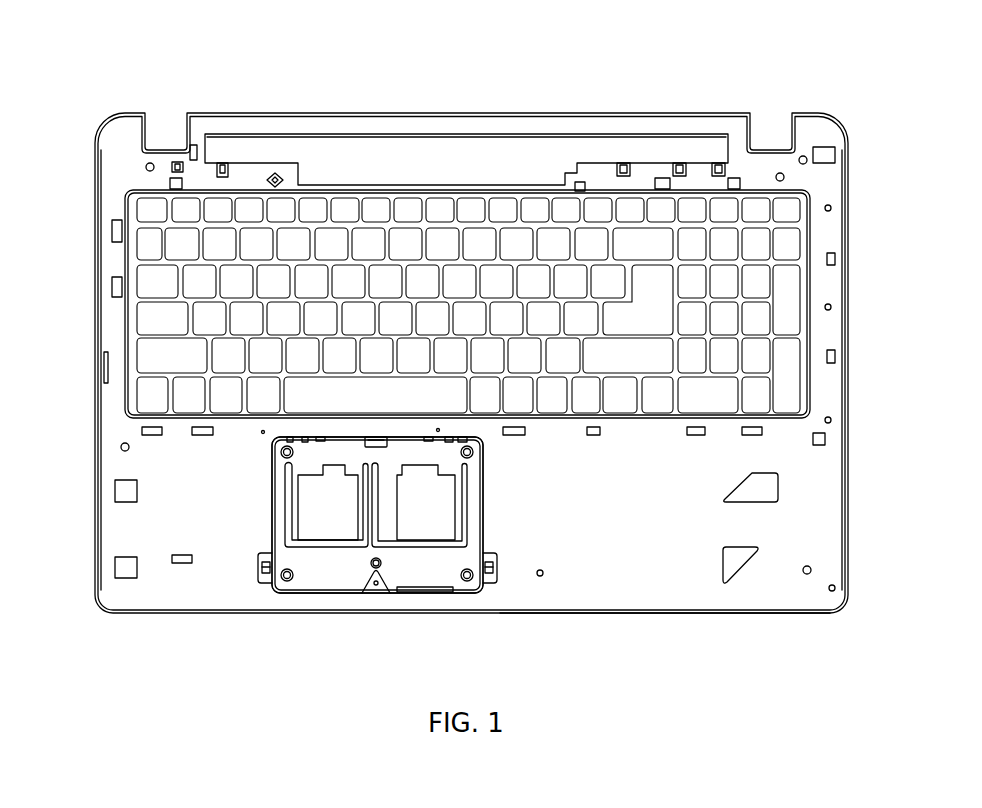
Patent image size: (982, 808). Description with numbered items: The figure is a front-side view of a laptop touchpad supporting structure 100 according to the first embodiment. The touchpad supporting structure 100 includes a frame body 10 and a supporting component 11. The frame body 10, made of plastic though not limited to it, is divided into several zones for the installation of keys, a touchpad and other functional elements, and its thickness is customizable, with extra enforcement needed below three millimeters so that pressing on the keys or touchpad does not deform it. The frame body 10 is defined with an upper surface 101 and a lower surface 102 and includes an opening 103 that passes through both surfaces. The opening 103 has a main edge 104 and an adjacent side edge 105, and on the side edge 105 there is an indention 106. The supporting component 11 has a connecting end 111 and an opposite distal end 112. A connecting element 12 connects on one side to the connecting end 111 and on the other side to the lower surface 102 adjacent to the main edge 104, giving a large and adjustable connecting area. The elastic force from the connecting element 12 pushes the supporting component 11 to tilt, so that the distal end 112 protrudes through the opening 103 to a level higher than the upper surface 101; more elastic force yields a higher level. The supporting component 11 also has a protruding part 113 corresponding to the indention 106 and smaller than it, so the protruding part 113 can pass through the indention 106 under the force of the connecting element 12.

The touchpad supporting structure 100 is at (97, 86).
The frame body 10 is at (847, 518).
The upper surface 101 is at (735, 595).
The lower surface 102 is at (670, 614).
The opening 103 is at (347, 594).
The main edge 104 is at (320, 437).
The side edge 105 is at (483, 485).
The indention 106 is at (497, 563).
The supporting component 11 is at (298, 575).
The connecting end 111 is at (428, 437).
The distal end 112 is at (465, 583).
The protruding part 113 is at (258, 573).
The connecting element 12 is at (373, 437).